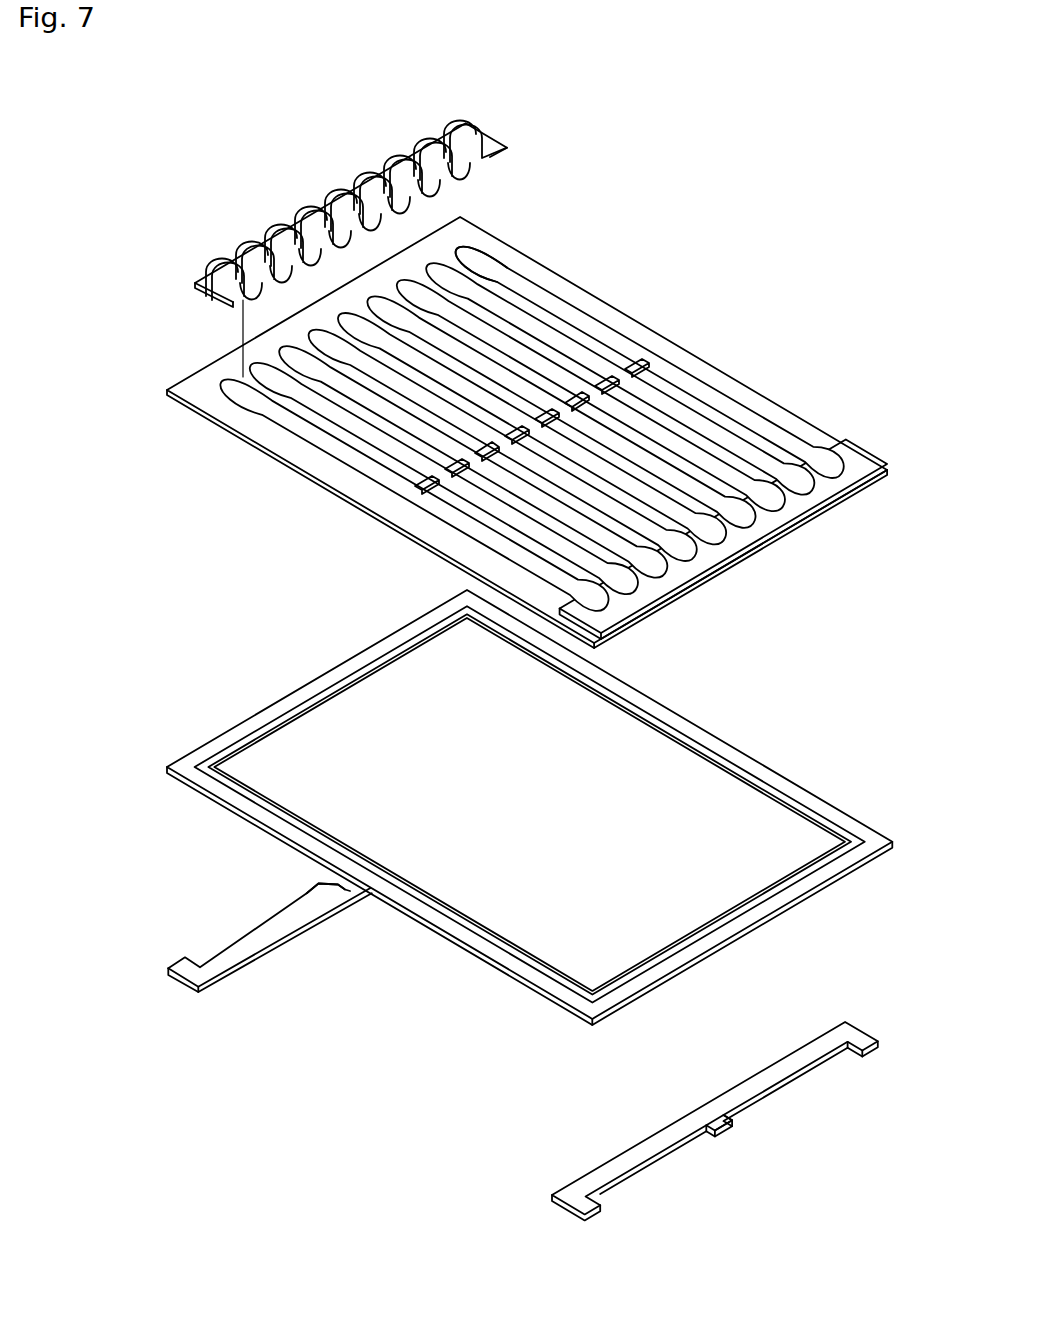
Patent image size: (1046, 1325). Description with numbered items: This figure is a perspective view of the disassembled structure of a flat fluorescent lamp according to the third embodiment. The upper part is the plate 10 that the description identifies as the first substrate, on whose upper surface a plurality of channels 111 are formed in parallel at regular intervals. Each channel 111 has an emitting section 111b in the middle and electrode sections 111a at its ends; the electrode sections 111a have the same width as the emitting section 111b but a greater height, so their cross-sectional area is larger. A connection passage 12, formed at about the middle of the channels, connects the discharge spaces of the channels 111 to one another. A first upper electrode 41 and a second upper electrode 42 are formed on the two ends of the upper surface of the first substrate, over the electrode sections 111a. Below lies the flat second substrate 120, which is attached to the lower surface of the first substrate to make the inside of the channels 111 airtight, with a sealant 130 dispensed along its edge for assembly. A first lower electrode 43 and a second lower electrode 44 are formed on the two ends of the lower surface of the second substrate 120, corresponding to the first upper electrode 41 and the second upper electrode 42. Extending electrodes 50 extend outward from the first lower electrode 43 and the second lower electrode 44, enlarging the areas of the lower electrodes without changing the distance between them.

The substrate plate 10 is at (282, 445).
The connection passage 12 is at (633, 362).
The first upper electrode 41 is at (293, 224).
The second upper electrode 42 is at (773, 520).
The first lower electrode 43 is at (256, 947).
The second lower electrode 44 is at (600, 1176).
The extending electrode 50 is at (306, 888).
The channel 111 is at (531, 366).
The electrode section 111a is at (475, 248).
The emitting section 111b is at (525, 277).
The second substrate 120 is at (720, 748).
The sealant 130 is at (803, 813).